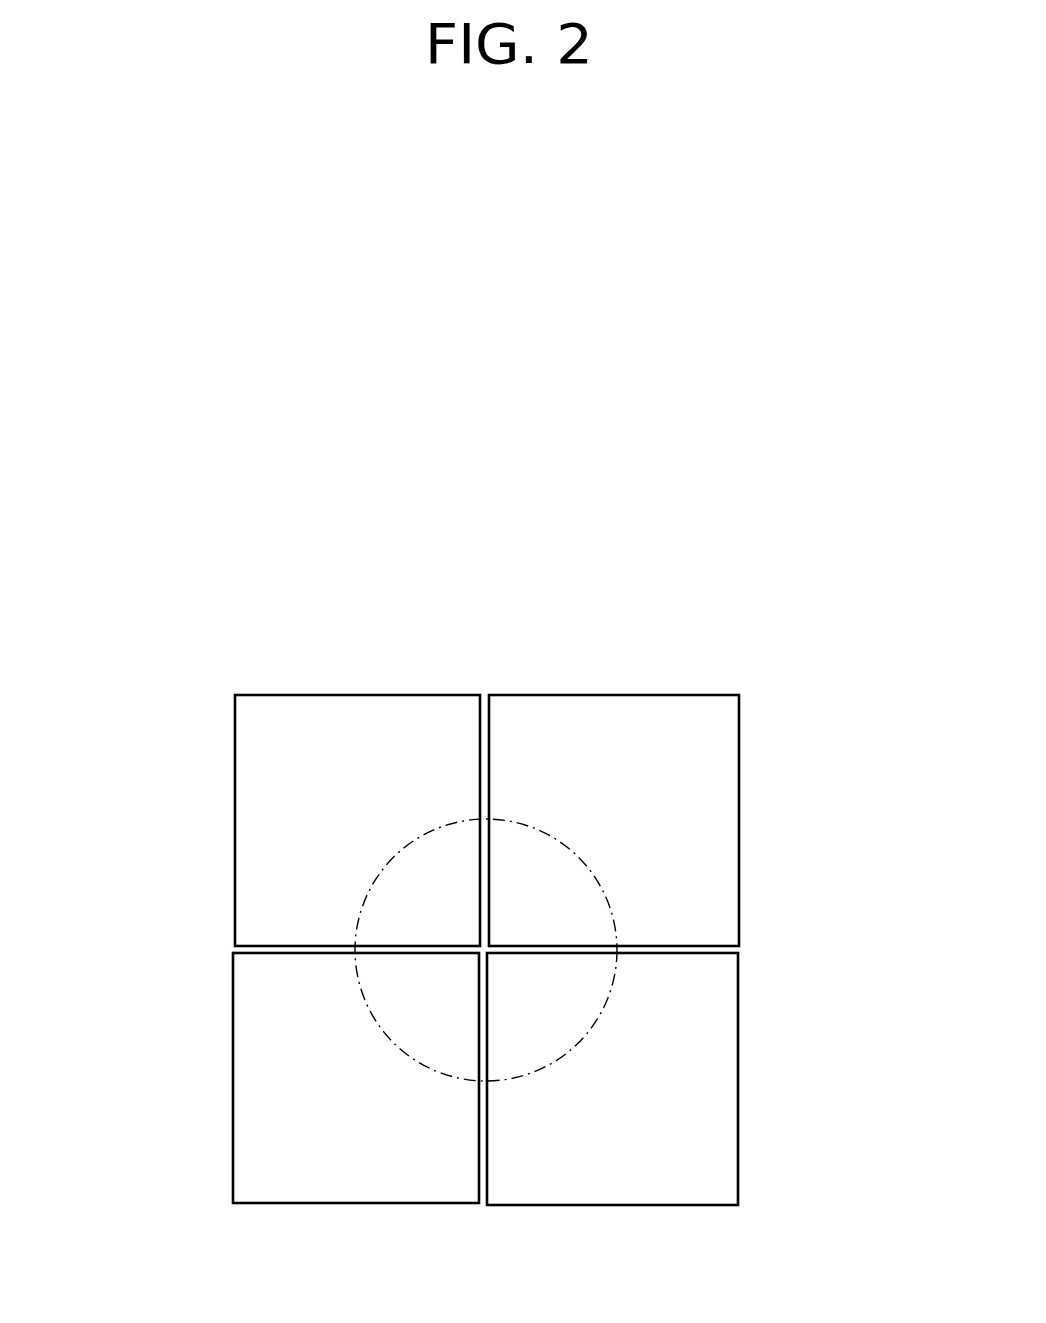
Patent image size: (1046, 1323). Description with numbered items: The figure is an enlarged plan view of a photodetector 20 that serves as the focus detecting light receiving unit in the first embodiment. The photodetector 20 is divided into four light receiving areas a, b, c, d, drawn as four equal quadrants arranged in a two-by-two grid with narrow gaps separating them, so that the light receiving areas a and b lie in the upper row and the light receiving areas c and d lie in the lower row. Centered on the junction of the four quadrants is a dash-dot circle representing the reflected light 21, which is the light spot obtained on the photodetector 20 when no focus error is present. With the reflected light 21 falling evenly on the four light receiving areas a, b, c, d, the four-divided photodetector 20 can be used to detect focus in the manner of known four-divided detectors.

The photodetector 20 is at (491, 771).
The reflected light 21 is at (605, 893).
The light receiving area a is at (278, 790).
The light receiving area b is at (678, 788).
The light receiving area c is at (295, 1136).
The light receiving area d is at (672, 1157).